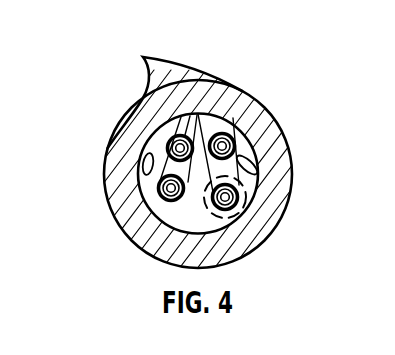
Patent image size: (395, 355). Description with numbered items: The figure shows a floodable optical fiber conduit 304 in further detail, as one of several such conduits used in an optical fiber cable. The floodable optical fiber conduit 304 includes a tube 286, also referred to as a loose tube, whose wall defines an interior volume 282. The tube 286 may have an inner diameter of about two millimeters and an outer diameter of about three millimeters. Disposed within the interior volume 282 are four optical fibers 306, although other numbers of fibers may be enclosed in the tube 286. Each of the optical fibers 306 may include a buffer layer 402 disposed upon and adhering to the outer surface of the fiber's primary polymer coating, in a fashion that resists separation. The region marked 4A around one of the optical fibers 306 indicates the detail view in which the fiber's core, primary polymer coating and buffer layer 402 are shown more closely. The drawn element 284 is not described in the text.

The floodable optical fiber conduit 304 is at (110, 42).
The optical fiber 306 is at (211, 82).
The buffer layer 402 is at (268, 125).
The tube 286 is at (282, 161).
The lumen / opening 284 is at (142, 162).
The interior volume 282 is at (160, 221).
The detail view region 4A is at (248, 201).